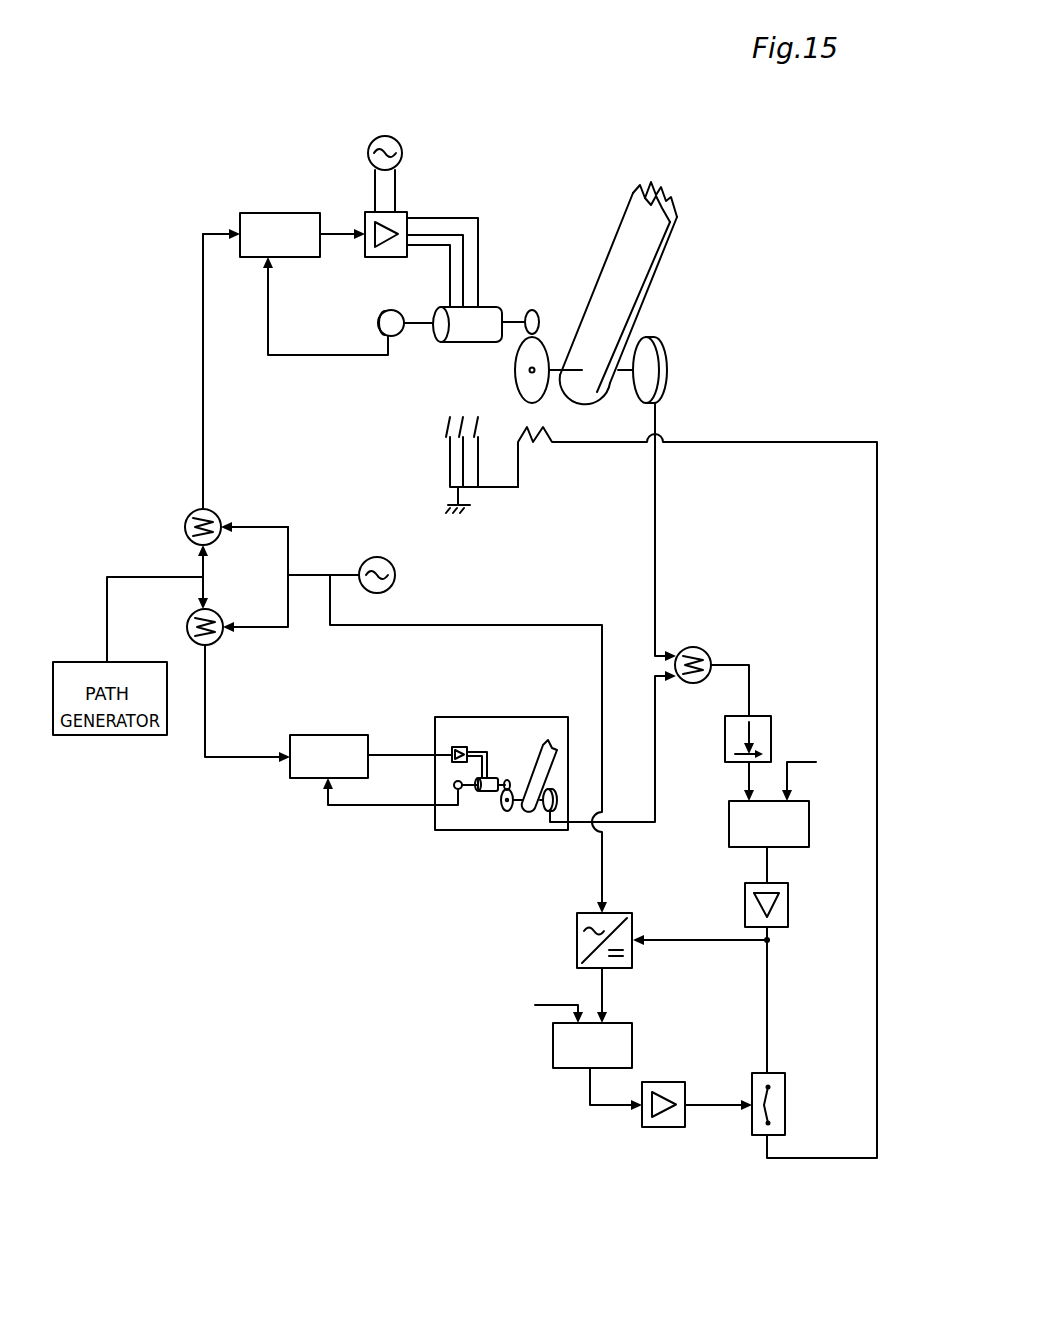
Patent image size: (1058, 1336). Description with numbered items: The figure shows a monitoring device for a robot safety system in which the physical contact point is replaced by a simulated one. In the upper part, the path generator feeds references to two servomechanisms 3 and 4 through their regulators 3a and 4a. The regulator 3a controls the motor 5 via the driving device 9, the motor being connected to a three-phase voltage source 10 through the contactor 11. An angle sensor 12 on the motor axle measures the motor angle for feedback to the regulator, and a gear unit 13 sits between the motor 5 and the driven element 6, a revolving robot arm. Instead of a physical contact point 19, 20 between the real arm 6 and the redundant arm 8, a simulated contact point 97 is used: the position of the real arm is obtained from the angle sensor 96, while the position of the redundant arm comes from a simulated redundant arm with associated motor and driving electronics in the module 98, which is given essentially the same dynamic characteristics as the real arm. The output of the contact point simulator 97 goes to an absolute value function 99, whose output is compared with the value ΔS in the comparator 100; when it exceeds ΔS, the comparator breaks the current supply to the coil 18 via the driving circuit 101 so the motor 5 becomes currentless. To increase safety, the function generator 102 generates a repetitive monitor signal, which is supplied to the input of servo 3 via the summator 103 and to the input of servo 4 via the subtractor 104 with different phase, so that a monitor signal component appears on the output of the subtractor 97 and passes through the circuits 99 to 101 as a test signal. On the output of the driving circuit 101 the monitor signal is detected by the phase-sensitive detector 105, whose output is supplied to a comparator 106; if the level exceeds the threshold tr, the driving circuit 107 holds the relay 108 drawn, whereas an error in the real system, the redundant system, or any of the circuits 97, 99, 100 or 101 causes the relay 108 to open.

The servomechanism 3 is at (256, 190).
The regulator 3a is at (277, 212).
The driving device 9 is at (405, 212).
The three-phase voltage source 10 is at (402, 147).
The angle sensor 12 is at (390, 310).
The motor 5 is at (490, 305).
The gear unit 13 is at (540, 343).
The element (arm) 6 is at (662, 254).
The angle sensor 96 is at (657, 340).
The contactor 11 is at (450, 433).
The coil 18 is at (533, 445).
The summator 103 is at (213, 510).
The subtractor 104 is at (220, 642).
The function generator 102 is at (395, 570).
The contact point 19 is at (668, 648).
The contact point 20 is at (660, 674).
The simulated contact point (subtractor) 97 is at (710, 648).
The redundant element (arm) 8 is at (683, 724).
The absolute value function 99 is at (778, 725).
The simulated redundant arm module 98 is at (495, 717).
The regulator 4a is at (325, 734).
The servomechanism 4 is at (328, 842).
The comparator 100 is at (810, 824).
The phase-sensitive detector 105 is at (628, 908).
The driving circuit 101 is at (789, 895).
The comparator 106 is at (633, 1042).
The driving circuit 107 is at (663, 1127).
The relay 108 is at (788, 1082).